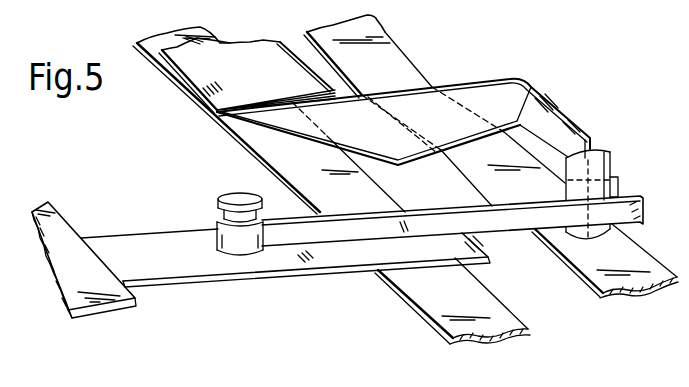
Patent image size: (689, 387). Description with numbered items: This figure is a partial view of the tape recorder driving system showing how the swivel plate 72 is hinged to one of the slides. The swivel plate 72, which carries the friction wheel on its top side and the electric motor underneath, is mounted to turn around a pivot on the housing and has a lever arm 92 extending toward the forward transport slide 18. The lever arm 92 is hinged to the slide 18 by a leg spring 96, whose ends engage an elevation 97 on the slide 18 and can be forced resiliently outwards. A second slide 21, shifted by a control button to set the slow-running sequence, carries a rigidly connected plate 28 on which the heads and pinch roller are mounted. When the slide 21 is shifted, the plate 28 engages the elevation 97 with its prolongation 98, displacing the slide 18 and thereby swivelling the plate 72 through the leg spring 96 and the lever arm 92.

The forward transport slide 18 is at (628, 280).
The slide 21 is at (423, 293).
The plate 28 is at (200, 70).
The swivel plate 72 is at (110, 310).
The lever arm 92 is at (152, 242).
The leg spring 96 is at (520, 227).
The elevation 97 is at (612, 168).
The prolongation 98 is at (547, 118).